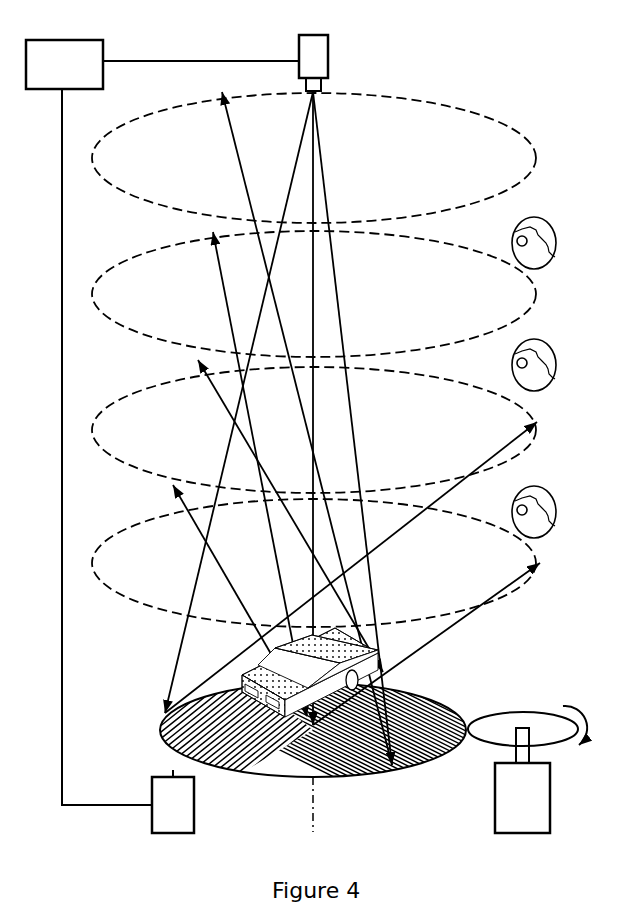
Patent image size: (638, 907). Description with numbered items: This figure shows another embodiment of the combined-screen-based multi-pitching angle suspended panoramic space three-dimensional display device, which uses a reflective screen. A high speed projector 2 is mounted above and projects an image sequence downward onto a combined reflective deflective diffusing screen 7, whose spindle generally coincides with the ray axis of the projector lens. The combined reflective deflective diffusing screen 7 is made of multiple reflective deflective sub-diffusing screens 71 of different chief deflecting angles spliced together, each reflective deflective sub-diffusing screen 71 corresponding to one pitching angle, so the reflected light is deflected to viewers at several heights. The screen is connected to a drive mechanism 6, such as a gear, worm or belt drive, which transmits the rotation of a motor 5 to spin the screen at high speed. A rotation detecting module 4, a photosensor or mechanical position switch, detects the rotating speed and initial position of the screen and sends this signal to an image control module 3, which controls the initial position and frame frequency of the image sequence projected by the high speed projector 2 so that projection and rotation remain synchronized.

The high speed projector 2 is at (327, 48).
The image control module 3 is at (103, 48).
The rotation detecting module 4 is at (195, 807).
The motor 5 is at (552, 812).
The drive mechanism 6 is at (547, 747).
The combined reflective deflective diffusing screen 7 is at (349, 733).
The reflective deflective sub-diffusing screen 71 is at (435, 697).